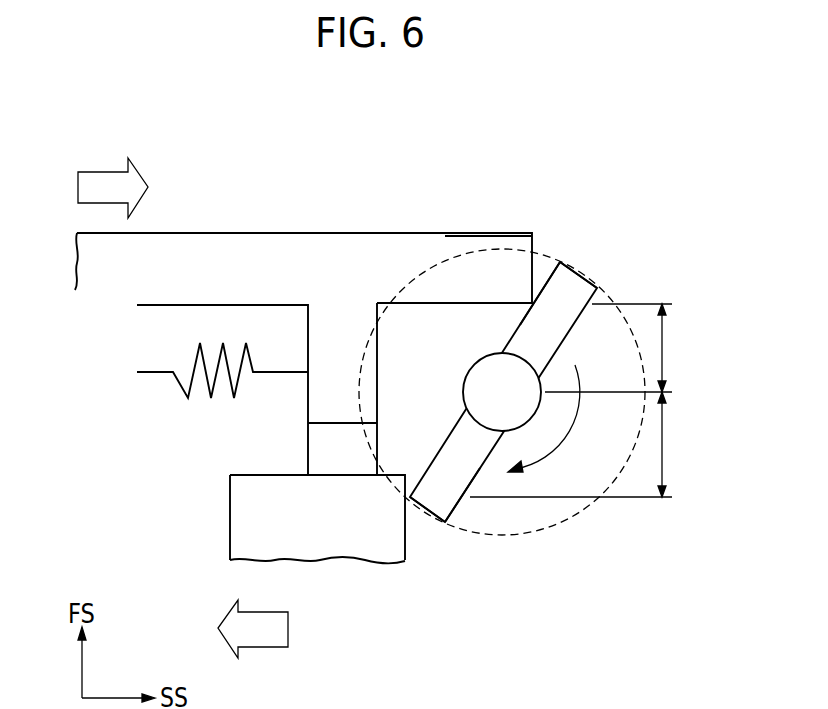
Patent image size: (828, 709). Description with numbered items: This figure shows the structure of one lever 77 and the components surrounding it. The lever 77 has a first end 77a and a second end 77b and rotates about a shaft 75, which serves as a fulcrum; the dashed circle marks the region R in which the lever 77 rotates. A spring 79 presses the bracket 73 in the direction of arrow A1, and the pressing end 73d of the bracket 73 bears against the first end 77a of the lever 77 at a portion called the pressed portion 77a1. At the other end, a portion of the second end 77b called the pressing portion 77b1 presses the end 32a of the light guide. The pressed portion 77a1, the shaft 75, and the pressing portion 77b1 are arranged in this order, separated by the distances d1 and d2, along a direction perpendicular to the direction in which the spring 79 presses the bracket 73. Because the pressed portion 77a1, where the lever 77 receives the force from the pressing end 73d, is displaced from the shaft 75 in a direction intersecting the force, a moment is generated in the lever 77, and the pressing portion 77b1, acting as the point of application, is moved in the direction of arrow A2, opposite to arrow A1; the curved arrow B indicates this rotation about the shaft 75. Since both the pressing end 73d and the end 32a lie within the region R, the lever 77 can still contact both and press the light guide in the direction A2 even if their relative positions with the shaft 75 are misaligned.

The bracket 73 is at (388, 207).
The pressing end 73d is at (444, 252).
The spring 79 is at (227, 349).
The end of the light guide 32a is at (268, 517).
The lever 77 is at (476, 510).
The first end 77a is at (577, 295).
The pressed portion 77a1 is at (537, 310).
The second end 77b is at (447, 498).
The pressing portion 77b1 is at (428, 513).
The shaft 75 is at (483, 380).
The region R is at (612, 300).
The rotation direction B is at (548, 418).
The distance d1 is at (617, 348).
The distance d2 is at (580, 444).
The arrow A1 is at (113, 179).
The arrow A2 is at (270, 629).